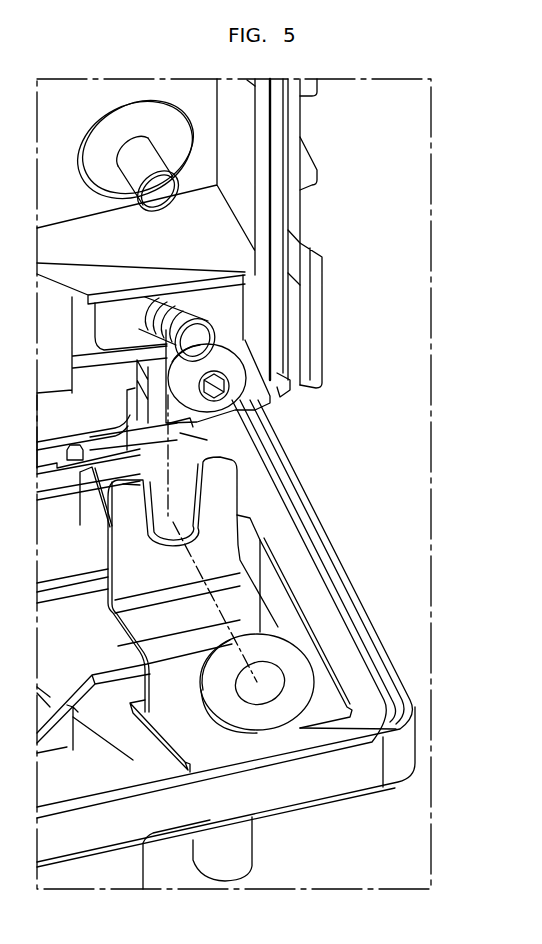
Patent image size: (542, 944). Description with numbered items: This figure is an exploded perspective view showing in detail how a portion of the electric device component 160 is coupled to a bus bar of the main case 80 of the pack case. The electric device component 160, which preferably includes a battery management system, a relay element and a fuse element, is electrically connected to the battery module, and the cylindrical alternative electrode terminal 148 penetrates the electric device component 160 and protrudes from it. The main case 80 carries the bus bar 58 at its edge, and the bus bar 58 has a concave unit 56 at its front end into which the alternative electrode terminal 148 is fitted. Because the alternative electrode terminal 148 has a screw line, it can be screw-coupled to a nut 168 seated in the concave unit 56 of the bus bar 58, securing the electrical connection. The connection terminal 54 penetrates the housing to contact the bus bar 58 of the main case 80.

The alternative electrode terminal 148 is at (203, 302).
The electric device component 160 is at (280, 352).
The concave unit 56 is at (233, 503).
The nut 168 is at (290, 648).
The bus bar 58 is at (297, 727).
The main case 80 is at (398, 753).
The connection terminal 54 is at (240, 847).